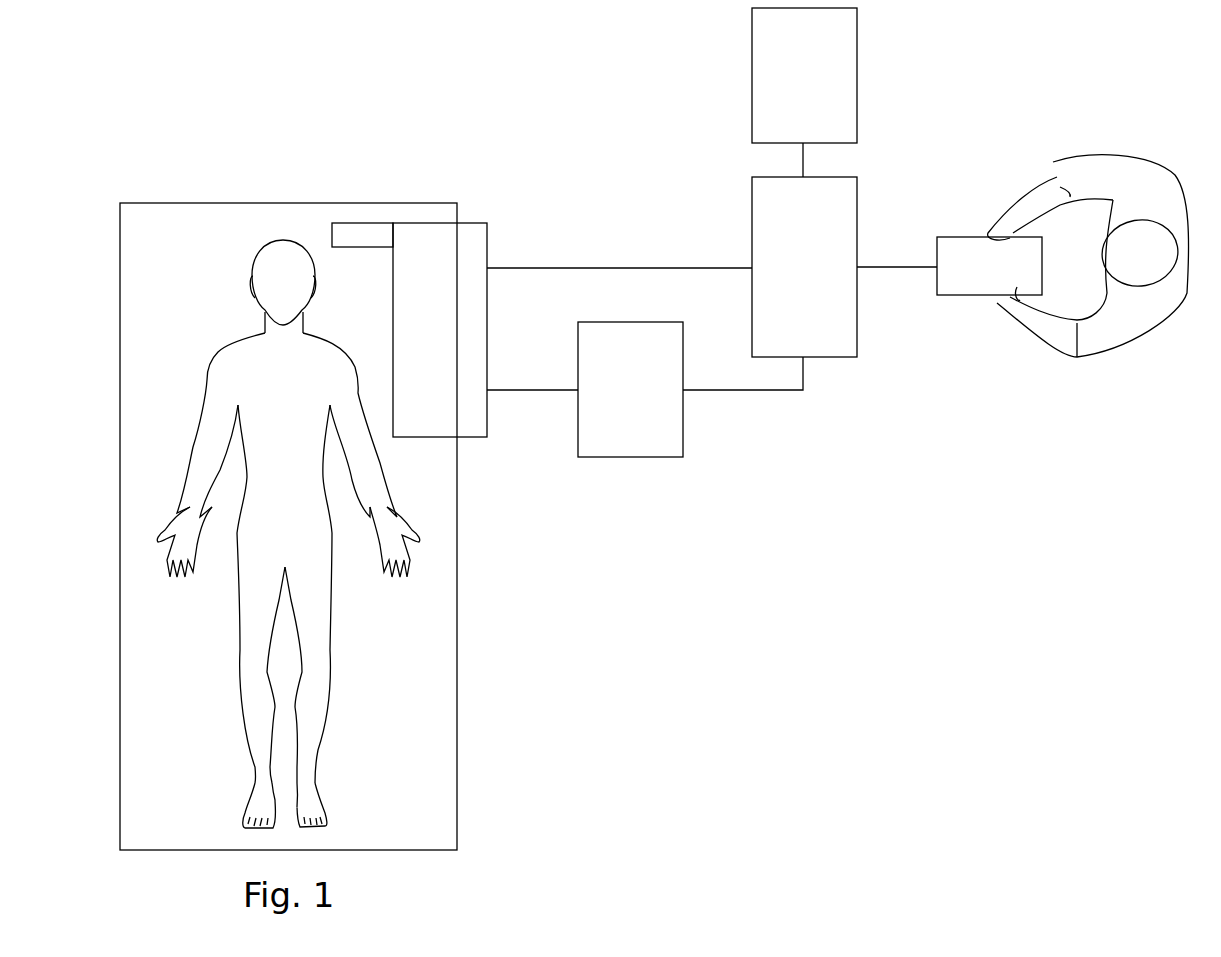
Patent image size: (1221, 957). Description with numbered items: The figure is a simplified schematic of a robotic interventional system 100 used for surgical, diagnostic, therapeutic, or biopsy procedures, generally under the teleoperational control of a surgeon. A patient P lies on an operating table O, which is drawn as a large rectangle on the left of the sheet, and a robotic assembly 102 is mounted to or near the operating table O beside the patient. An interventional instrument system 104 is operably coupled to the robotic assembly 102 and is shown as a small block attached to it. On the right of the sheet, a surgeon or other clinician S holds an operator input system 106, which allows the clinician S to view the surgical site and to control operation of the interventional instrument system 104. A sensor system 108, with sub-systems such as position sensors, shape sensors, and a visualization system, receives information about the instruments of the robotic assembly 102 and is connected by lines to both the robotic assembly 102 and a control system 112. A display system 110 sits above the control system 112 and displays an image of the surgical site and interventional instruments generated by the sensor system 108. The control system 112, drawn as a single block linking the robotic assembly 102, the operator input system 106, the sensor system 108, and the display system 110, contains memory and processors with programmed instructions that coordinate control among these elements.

The robotic interventional system 100 is at (290, 110).
The robotic assembly 102 is at (460, 343).
The interventional instrument system 104 is at (363, 223).
The operator input system 106 is at (967, 237).
The sensor system 108 is at (650, 403).
The display system 110 is at (824, 89).
The control system 112 is at (824, 280).
The patient P is at (237, 619).
The operating table O is at (458, 602).
The surgeon or clinician S is at (1110, 158).